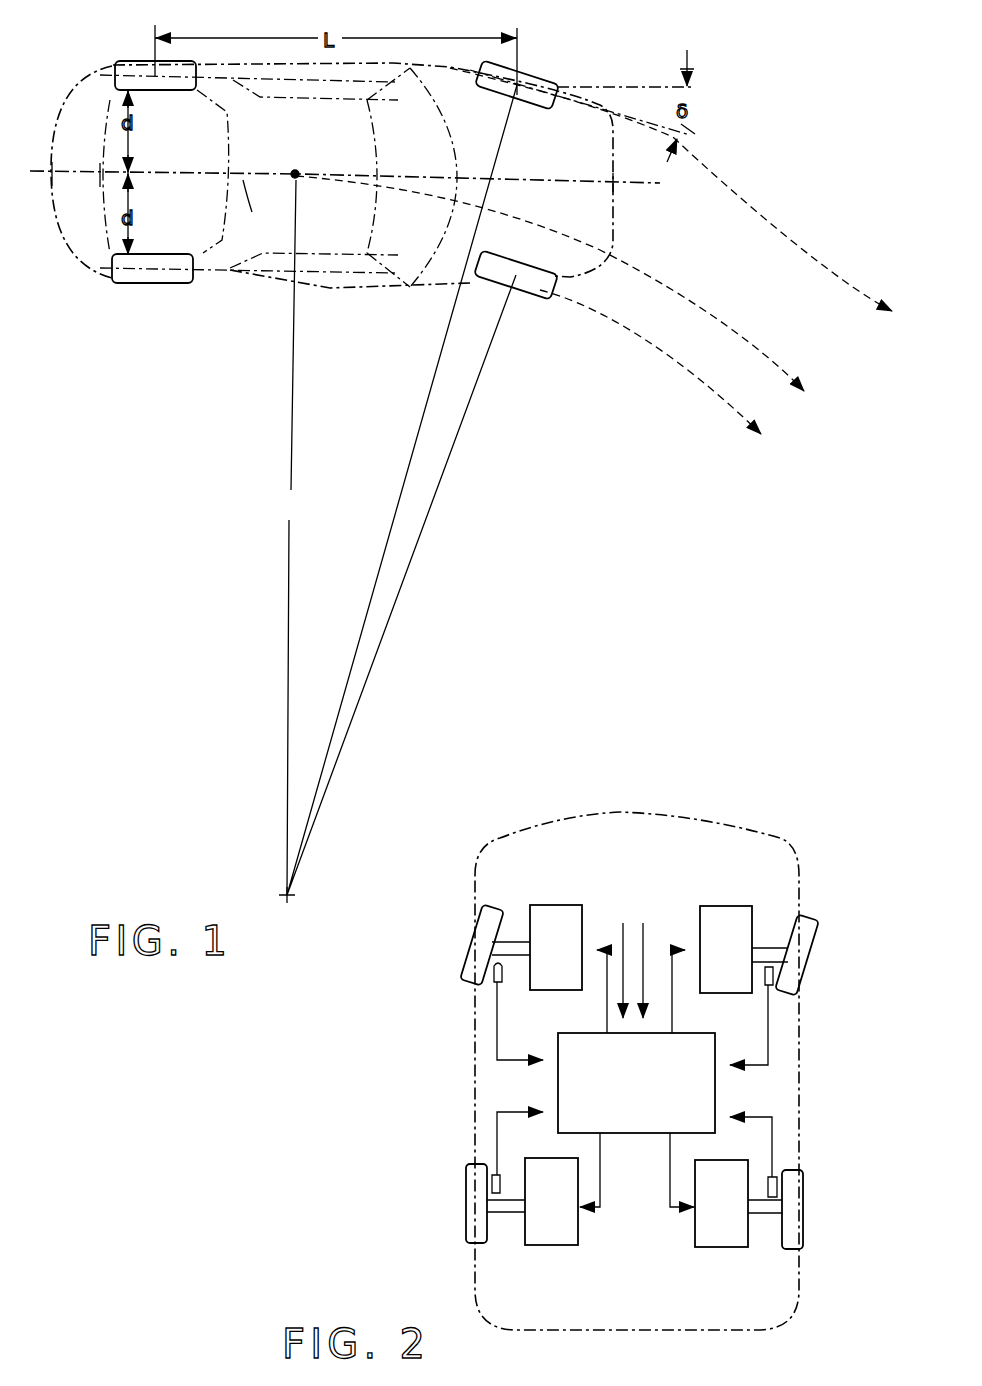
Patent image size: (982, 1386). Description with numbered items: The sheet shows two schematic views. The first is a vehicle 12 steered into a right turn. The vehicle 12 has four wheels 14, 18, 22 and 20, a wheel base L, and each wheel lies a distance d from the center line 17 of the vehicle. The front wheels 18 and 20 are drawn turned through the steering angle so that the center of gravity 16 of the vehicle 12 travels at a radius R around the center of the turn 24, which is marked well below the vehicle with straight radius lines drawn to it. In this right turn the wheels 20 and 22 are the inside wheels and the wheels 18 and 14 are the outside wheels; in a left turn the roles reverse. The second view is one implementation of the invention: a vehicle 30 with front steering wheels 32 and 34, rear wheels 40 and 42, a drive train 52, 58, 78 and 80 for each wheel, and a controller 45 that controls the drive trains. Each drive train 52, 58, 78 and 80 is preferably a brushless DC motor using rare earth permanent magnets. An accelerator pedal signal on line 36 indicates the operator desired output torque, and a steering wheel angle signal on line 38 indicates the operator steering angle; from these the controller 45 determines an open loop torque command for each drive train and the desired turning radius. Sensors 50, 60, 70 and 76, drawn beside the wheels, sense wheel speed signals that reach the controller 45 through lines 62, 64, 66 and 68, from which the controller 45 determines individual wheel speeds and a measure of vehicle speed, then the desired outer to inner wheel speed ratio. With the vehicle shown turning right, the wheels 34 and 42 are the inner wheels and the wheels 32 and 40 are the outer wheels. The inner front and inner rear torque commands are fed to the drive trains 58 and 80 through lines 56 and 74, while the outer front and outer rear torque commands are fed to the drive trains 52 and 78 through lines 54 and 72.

In FIG. 1, the vehicle 12 is at (47, 130).
In FIG. 1, the wheel 14 is at (142, 66).
In FIG. 1, the center of gravity 16 is at (292, 169).
In FIG. 1, the center line 17 is at (259, 210).
In FIG. 1, the front wheel 18 is at (535, 73).
In FIG. 1, the front wheel 20 is at (528, 298).
In FIG. 1, the wheel 22 is at (148, 283).
In FIG. 1, the center of the turn 24 is at (283, 890).
In FIG. 2, the vehicle 30 is at (630, 790).
In FIG. 2, the front steering wheel 32 is at (468, 950).
In FIG. 2, the front steering wheel 34 is at (812, 945).
In FIG. 2, the line 36 is at (623, 923).
In FIG. 2, the line 38 is at (643, 923).
In FIG. 2, the rear wheel 40 is at (463, 1198).
In FIG. 2, the rear wheel 42 is at (805, 1203).
In FIG. 2, the controller 45 is at (715, 1088).
In FIG. 2, the sensor 50 is at (522, 940).
In FIG. 2, the drive train 52 is at (595, 928).
In FIG. 2, the line 54 is at (602, 988).
In FIG. 2, the line 56 is at (672, 950).
In FIG. 2, the drive train 58 is at (697, 935).
In FIG. 2, the sensor 60 is at (768, 988).
In FIG. 2, the line 62 is at (525, 1055).
In FIG. 2, the line 64 is at (768, 1038).
In FIG. 2, the line 66 is at (515, 1108).
In FIG. 2, the line 68 is at (750, 1114).
In FIG. 2, the sensor 70 is at (495, 1174).
In FIG. 2, the line 72 is at (607, 1177).
In FIG. 2, the line 74 is at (663, 1147).
In FIG. 2, the sensor 76 is at (773, 1177).
In FIG. 2, the drive train 78 is at (560, 1246).
In FIG. 2, the drive train 80 is at (730, 1248).